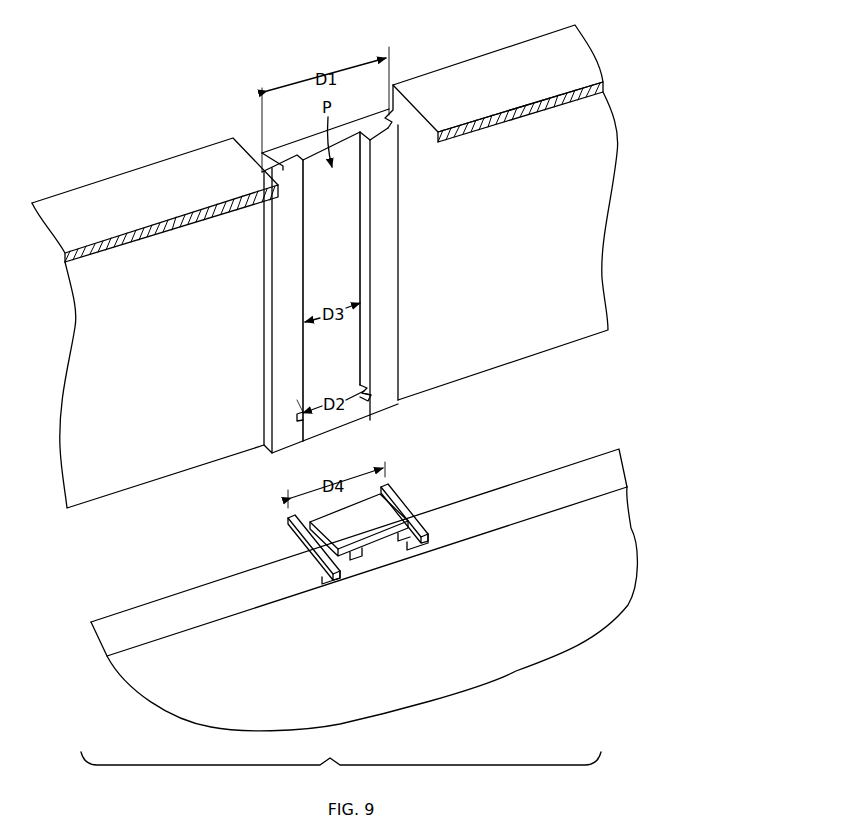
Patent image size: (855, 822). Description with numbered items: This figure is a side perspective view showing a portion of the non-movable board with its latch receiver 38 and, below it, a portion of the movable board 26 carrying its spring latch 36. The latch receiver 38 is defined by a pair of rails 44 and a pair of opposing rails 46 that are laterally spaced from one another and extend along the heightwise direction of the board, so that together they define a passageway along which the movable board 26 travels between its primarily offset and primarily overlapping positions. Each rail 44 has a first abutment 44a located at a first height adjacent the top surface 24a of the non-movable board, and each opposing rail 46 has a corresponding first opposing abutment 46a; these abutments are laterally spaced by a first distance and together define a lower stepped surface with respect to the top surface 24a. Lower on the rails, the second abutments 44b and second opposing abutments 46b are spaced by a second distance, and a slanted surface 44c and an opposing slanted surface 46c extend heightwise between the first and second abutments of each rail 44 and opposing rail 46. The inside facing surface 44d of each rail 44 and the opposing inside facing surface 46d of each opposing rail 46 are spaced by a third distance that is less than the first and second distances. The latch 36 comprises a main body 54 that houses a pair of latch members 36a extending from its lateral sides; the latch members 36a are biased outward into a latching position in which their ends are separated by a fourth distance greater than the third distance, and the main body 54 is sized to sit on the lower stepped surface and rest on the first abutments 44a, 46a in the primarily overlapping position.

The top surface 24a is at (492, 82).
The movable board 26 is at (653, 450).
The spring latch 36 is at (336, 555).
The latch member 36a is at (290, 524).
The latch receiver 38 is at (243, 108).
The rail 44 is at (297, 309).
The first abutment 44a is at (280, 163).
The second abutment 44b is at (301, 418).
The slanted surface 44c is at (301, 410).
The inside facing surface 44d is at (305, 302).
The opposing rail 46 is at (387, 268).
The first opposing abutment 46a is at (380, 133).
The second opposing abutment 46b is at (363, 398).
The opposing slanted surface 46c is at (366, 381).
The opposing inside facing surface 46d is at (362, 242).
The main body 54 is at (370, 540).